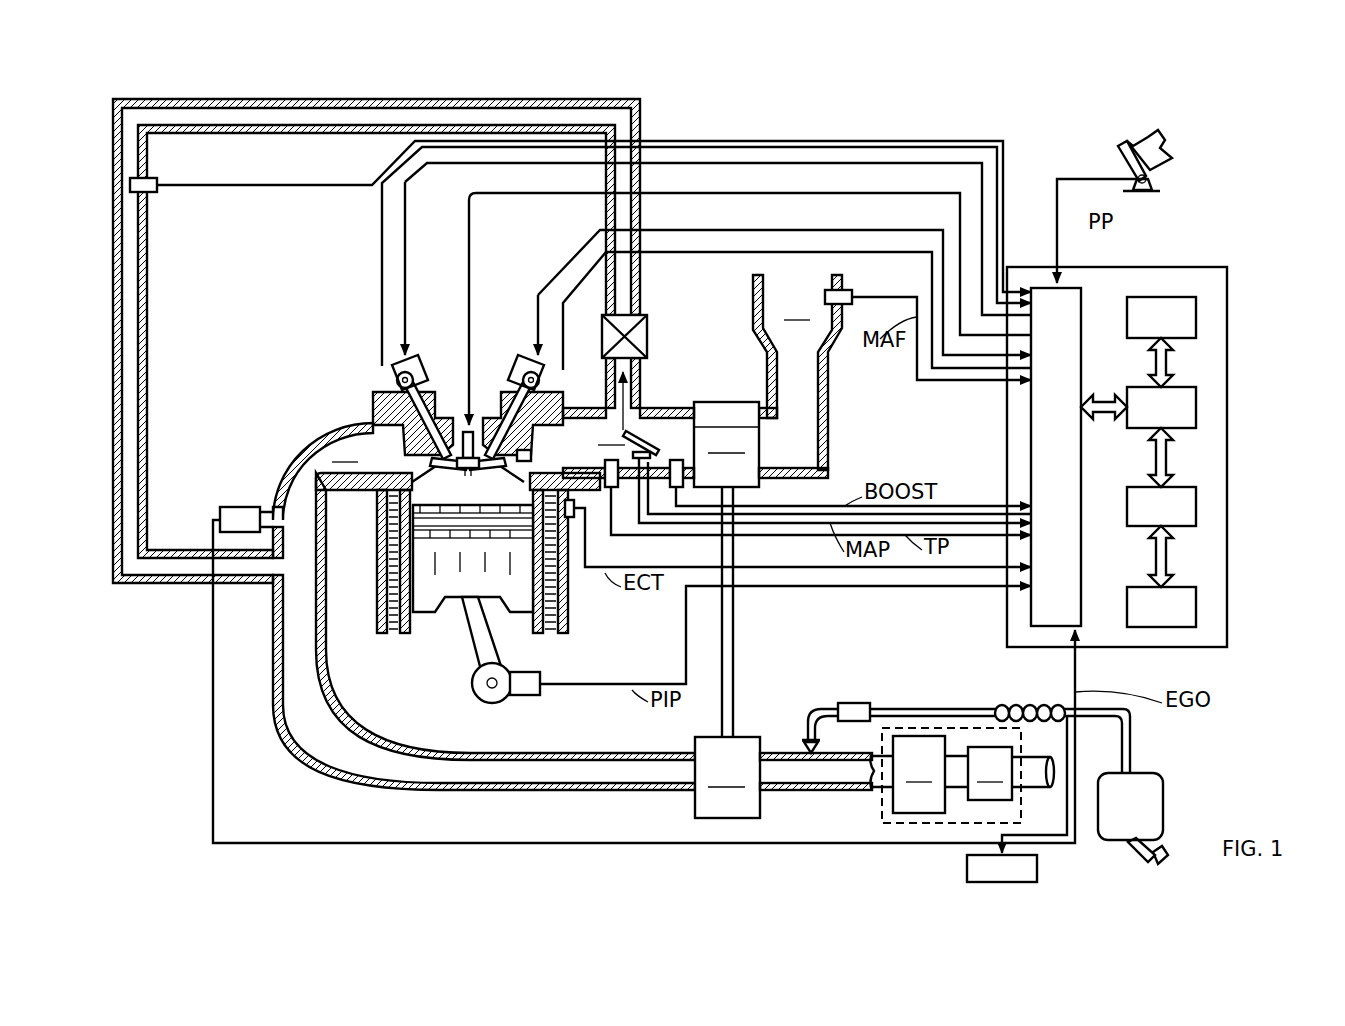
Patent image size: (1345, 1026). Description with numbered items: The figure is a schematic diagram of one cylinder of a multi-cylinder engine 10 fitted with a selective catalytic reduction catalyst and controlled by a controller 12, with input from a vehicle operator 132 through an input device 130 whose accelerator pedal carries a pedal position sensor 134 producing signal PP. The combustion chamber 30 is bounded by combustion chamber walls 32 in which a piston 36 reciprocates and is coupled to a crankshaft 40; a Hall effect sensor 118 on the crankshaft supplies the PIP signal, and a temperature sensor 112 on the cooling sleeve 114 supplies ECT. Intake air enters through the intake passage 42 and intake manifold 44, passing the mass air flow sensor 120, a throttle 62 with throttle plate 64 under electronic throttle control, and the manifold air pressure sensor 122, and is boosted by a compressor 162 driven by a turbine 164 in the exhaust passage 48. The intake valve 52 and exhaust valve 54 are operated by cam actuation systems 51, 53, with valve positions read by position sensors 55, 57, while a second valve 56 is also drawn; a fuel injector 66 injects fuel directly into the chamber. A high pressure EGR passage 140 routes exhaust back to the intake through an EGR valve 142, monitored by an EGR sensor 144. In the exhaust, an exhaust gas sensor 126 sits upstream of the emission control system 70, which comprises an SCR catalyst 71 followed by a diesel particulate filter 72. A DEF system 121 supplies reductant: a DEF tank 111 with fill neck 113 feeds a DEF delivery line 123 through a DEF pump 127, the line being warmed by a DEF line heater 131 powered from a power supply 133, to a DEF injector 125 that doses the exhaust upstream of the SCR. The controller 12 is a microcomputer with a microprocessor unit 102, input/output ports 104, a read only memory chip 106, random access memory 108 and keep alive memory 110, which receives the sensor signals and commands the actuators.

The engine 10 is at (305, 337).
The controller 12 is at (1160, 441).
The combustion chamber 30 is at (445, 492).
The combustion chamber walls 32 is at (410, 628).
The piston 36 is at (455, 585).
The crankshaft 40 is at (485, 703).
The intake passage 42 is at (797, 372).
The intake manifold 44 is at (695, 443).
The exhaust passage 48 is at (484, 606).
The cam actuation system 51 is at (528, 360).
The intake valve 52 is at (528, 459).
The cam actuation system 53 is at (410, 358).
The exhaust valve 54 is at (415, 452).
The position sensor 55 is at (540, 380).
The exhaust valve 56 is at (500, 425).
The position sensor 57 is at (395, 380).
The throttle 62 is at (640, 432).
The throttle plate 64 is at (669, 411).
The fuel injector 66 is at (473, 430).
The emission control system 70 is at (951, 747).
The SCR catalyst 71 is at (919, 774).
The diesel particulate filter 72 is at (990, 773).
The microprocessor unit 102 is at (1196, 408).
The input/output ports 104 is at (1083, 296).
The read only memory chip 106 is at (1196, 314).
The random access memory 108 is at (1196, 506).
The keep alive memory 110 is at (1196, 605).
The DEF tank 111 is at (1130, 806).
The temperature sensor 112 is at (572, 520).
The fill neck 113 is at (1128, 852).
The cooling sleeve 114 is at (555, 596).
The Hall effect sensor 118 is at (527, 700).
The mass air flow sensor 120 is at (845, 290).
The DEF system 121 is at (940, 659).
The manifold air pressure sensor 122 is at (606, 468).
The DEF delivery line 123 is at (968, 707).
The DEF injector 125 is at (802, 736).
The exhaust gas sensor 126 is at (220, 510).
The DEF pump 127 is at (843, 703).
The input device 130 is at (1123, 153).
The DEF line heater 131 is at (1020, 706).
The vehicle operator 132 is at (1166, 143).
The power supply 133 is at (1017, 799).
The pedal position sensor 134 is at (1152, 180).
The EGR passage 140 is at (382, 99).
The EGR valve 142 is at (643, 335).
The EGR sensor 144 is at (157, 192).
The compressor 162 is at (735, 444).
The turbine 164 is at (727, 777).